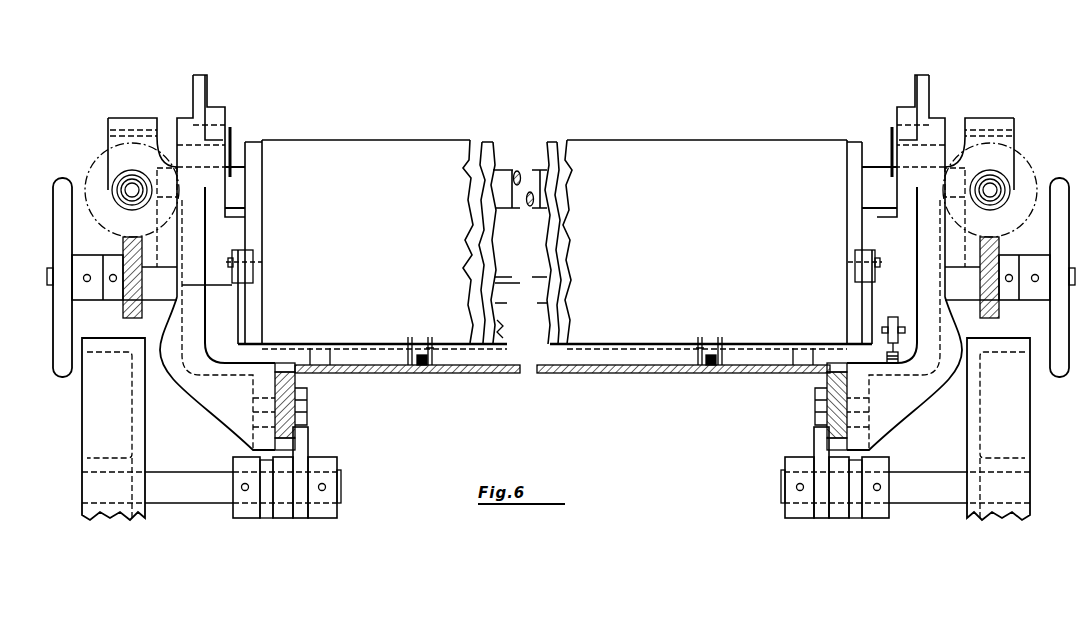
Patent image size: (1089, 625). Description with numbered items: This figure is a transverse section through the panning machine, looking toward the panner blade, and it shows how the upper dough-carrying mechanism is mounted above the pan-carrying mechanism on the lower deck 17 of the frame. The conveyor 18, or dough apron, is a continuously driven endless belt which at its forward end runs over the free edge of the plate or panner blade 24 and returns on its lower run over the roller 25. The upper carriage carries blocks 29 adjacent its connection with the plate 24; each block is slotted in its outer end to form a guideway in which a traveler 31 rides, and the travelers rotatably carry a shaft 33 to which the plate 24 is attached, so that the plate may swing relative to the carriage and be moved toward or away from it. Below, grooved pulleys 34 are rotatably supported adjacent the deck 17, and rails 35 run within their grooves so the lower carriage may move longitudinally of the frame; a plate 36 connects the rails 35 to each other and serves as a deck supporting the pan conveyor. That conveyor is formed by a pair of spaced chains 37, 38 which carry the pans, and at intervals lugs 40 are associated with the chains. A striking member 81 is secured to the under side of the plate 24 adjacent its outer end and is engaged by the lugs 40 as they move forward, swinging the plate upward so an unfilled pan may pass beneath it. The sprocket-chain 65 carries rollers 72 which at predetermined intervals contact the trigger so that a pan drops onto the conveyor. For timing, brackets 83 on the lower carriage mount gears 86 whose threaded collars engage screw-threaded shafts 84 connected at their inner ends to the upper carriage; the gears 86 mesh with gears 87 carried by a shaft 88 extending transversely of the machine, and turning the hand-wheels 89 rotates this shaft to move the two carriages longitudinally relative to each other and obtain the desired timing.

The lower deck 17 is at (556, 429).
The conveyor 18 is at (555, 244).
The panner blade 24 is at (253, 224).
The roller 25 is at (529, 190).
The block 29 is at (198, 82).
The traveler 31 is at (231, 131).
The shaft 33 is at (240, 144).
The grooved pulley 34 is at (296, 500).
The rail 35 is at (298, 412).
The plate 36 is at (545, 373).
The chain 37 is at (418, 353).
The chain 38 is at (705, 354).
The lug 40 is at (431, 358).
The sprocket-chain 65 is at (900, 364).
The roller 72 is at (893, 318).
The striking member 81 is at (500, 326).
The bracket 83 is at (561, 318).
The screw-threaded shaft 84 is at (130, 188).
The gear 86 is at (109, 222).
The gear 87 is at (124, 316).
The shaft 88 is at (218, 280).
The hand-wheel 89 is at (54, 202).